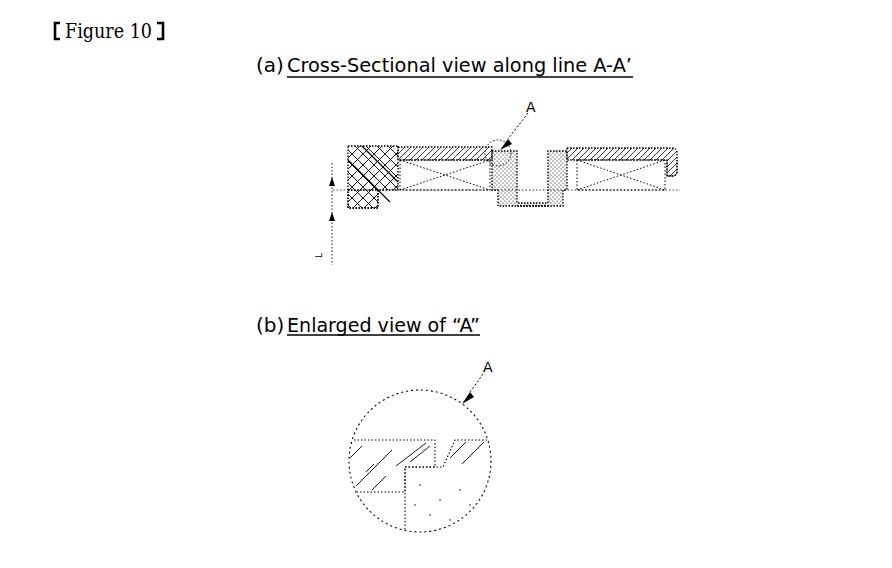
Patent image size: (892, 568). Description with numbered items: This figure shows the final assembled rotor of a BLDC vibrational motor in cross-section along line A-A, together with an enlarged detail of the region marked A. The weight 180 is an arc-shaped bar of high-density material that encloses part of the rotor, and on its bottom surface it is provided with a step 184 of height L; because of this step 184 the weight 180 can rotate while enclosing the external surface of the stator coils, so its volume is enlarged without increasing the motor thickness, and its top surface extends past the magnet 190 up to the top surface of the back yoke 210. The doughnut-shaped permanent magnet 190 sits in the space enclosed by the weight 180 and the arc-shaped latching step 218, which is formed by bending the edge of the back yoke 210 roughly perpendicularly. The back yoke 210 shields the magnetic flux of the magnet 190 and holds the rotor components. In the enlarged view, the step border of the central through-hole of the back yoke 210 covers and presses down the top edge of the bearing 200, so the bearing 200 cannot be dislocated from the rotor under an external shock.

The weight 180 is at (343, 152).
The step 184 is at (388, 193).
The magnet 190 is at (451, 189).
The bearing 200 is at (572, 199).
The back yoke 210 is at (639, 145).
The arc-shaped latching step 218 is at (677, 165).